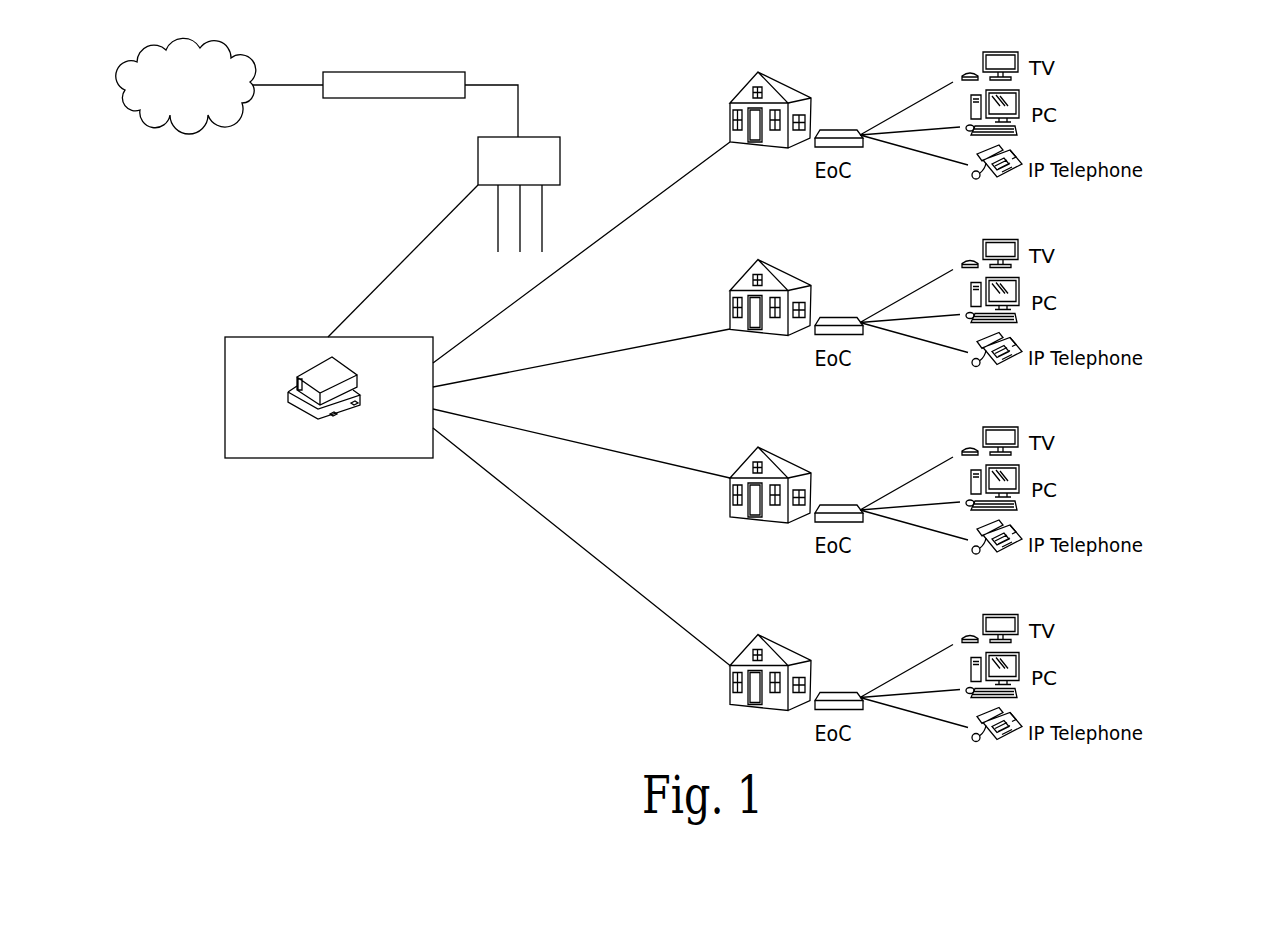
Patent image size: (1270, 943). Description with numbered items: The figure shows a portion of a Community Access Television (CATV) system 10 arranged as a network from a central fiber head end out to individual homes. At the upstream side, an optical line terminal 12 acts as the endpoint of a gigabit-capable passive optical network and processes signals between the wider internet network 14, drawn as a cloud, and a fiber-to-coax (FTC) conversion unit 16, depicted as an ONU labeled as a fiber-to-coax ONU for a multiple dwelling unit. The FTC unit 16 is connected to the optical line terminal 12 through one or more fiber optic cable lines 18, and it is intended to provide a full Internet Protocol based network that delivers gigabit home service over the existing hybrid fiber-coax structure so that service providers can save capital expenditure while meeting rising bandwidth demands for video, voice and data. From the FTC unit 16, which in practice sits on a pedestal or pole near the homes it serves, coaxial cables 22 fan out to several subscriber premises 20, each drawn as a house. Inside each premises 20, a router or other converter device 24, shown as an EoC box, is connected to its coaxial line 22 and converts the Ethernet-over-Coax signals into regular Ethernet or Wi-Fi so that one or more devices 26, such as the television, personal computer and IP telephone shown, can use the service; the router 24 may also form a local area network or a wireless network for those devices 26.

The Community Access Television (CATV) system 10 is at (1151, 74).
The optical line terminal 12 is at (393, 72).
The internet network 14 is at (132, 62).
The fiber-to-coax (FTC) conversion unit 16 is at (225, 378).
The fiber optic cable line 18 is at (400, 266).
The subscriber premises 20 is at (937, 68).
The coaxial cable 22 is at (603, 237).
The router or converter device 24 is at (892, 410).
The device 26 is at (1052, 386).